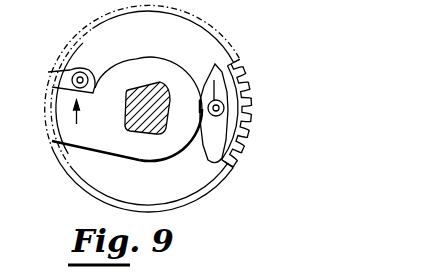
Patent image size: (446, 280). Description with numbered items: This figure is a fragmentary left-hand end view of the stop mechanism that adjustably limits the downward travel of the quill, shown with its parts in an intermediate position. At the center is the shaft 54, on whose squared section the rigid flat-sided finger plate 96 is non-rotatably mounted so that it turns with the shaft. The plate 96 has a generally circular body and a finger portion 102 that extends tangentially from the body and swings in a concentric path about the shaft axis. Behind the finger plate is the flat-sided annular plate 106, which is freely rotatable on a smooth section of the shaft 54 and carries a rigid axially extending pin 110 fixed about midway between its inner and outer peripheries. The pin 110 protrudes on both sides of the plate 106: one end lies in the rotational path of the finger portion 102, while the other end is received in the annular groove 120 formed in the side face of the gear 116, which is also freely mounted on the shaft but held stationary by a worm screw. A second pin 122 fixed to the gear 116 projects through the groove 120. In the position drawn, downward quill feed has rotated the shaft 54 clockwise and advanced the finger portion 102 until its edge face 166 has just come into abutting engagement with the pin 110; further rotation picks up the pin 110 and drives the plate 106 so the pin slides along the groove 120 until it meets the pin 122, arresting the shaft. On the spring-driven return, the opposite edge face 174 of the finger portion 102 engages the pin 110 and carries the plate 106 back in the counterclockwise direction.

The shaft 54 is at (136, 128).
The finger plate 96 is at (147, 162).
The finger portion 102 is at (58, 108).
The annular plate 106 is at (214, 46).
The pin 110 is at (73, 74).
The gear 116 is at (251, 72).
The annular groove 120 is at (207, 157).
The pin 122 is at (224, 107).
The edge face 166 is at (93, 88).
The edge face 174 is at (96, 150).